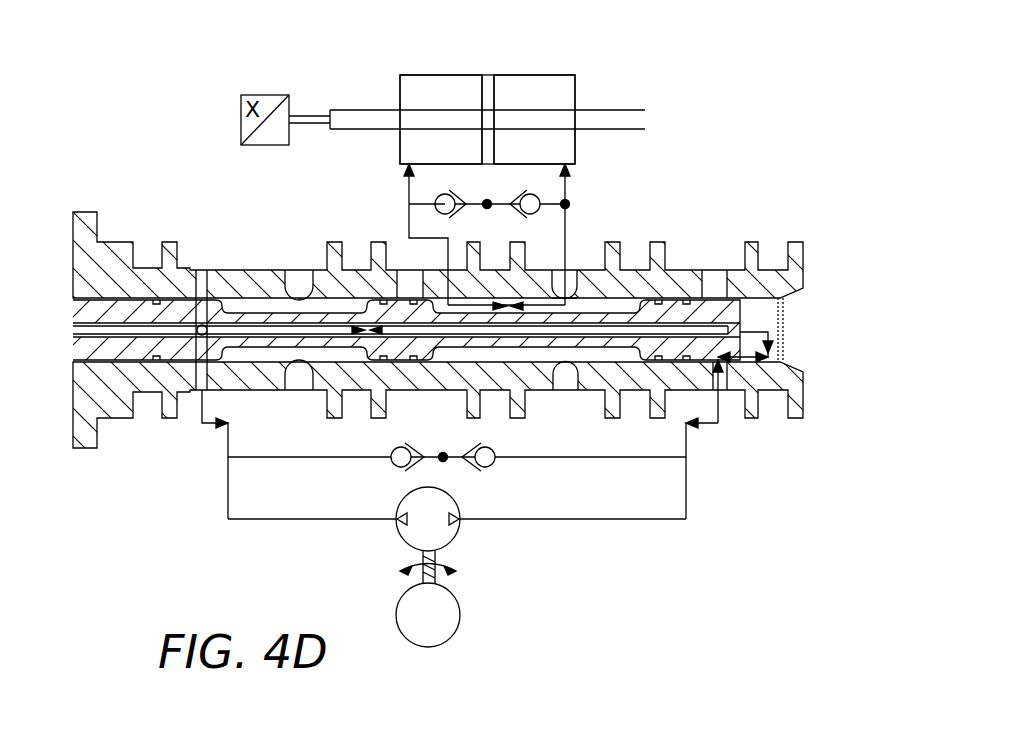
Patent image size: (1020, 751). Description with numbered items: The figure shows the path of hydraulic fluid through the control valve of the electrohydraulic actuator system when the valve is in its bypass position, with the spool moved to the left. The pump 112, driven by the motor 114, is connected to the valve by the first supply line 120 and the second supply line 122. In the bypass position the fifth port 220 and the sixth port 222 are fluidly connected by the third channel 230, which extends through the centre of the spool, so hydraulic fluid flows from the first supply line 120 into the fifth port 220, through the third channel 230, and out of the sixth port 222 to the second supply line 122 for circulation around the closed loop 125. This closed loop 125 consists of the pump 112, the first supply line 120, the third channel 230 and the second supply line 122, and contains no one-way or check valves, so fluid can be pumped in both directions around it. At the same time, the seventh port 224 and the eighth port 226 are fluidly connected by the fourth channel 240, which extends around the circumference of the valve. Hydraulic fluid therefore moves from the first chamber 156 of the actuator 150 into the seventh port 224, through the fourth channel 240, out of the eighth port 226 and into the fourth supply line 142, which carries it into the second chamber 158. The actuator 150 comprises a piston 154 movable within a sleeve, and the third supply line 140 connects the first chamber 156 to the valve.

The actuator 150 is at (538, 66).
The piston 154 is at (488, 78).
The first chamber 156 is at (575, 88).
The second chamber 158 is at (406, 90).
The third supply line 140 is at (565, 188).
The fourth supply line 142 is at (406, 188).
The seventh port 224 is at (572, 278).
The eighth port 226 is at (445, 270).
The fourth channel 240 is at (507, 302).
The third channel 230 is at (296, 334).
The sixth port 222 is at (200, 390).
The fifth port 220 is at (722, 384).
The closed loop 125 is at (688, 503).
The second supply line 122 is at (238, 520).
The first supply line 120 is at (660, 520).
The pump 112 is at (455, 538).
The motor 114 is at (461, 612).